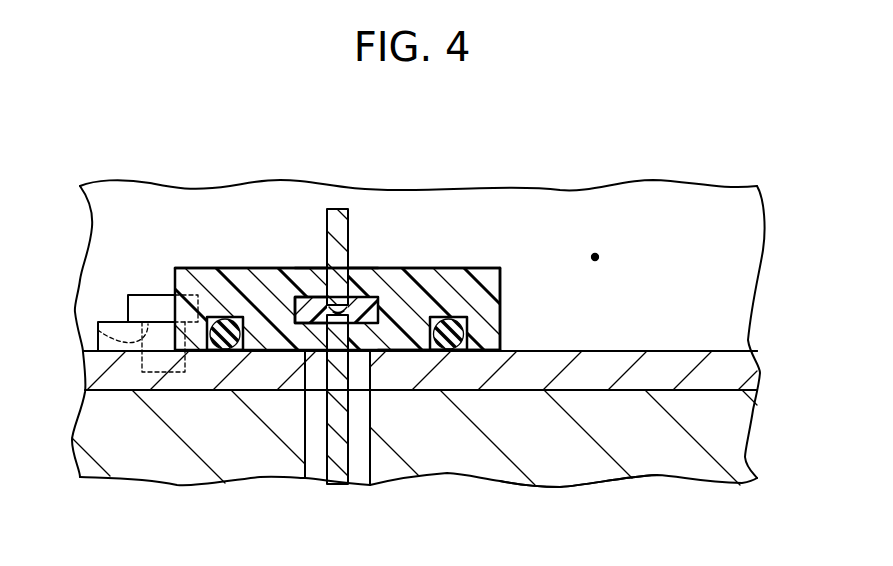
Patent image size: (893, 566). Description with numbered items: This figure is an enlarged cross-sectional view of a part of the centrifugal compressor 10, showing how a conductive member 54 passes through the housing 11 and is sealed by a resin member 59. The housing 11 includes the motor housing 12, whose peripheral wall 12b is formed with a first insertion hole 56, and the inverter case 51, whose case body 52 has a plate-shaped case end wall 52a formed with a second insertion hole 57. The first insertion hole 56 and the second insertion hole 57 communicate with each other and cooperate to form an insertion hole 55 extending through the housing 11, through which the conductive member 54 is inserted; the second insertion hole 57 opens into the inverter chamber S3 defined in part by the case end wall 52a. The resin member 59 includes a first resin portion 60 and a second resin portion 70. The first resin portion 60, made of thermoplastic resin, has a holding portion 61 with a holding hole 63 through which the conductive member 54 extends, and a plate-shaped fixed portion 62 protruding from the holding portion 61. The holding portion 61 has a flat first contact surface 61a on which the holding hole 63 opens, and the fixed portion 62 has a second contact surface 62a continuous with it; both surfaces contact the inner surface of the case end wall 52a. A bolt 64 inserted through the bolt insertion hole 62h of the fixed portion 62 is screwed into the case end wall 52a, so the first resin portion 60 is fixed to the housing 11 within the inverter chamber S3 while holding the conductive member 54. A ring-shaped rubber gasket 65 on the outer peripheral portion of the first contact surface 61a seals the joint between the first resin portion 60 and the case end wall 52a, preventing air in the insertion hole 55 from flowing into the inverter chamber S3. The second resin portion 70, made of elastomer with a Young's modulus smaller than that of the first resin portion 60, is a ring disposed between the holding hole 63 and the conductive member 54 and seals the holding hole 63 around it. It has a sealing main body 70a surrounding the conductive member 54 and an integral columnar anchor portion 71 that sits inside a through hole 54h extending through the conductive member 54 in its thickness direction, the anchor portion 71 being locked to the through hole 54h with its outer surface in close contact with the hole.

The centrifugal compressor 10 is at (95, 159).
The housing 11 is at (85, 457).
The motor housing 12 is at (735, 437).
The peripheral wall 12b is at (563, 480).
The inverter case 51 is at (746, 370).
The case body 52 is at (90, 362).
The case end wall 52a is at (615, 352).
The conductive member 54 is at (334, 208).
The through hole 54h is at (352, 304).
The insertion hole 55 is at (370, 448).
The first insertion hole 56 is at (305, 433).
The second insertion hole 57 is at (305, 370).
The resin member 59 is at (500, 278).
The first resin portion 60 is at (480, 268).
The holding portion 61 is at (493, 308).
The first contact surface 61a is at (412, 353).
The fixed portion 62 is at (110, 327).
The second contact surface 62a is at (130, 355).
The bolt insertion hole 62h is at (98, 330).
The holding hole 63 is at (335, 268).
The bolt 64 is at (146, 295).
The gasket 65 is at (222, 344).
The second resin portion 70 is at (368, 299).
The sealing main body 70a is at (295, 301).
The anchor portion 71 is at (380, 319).
The inverter chamber S3 is at (595, 257).